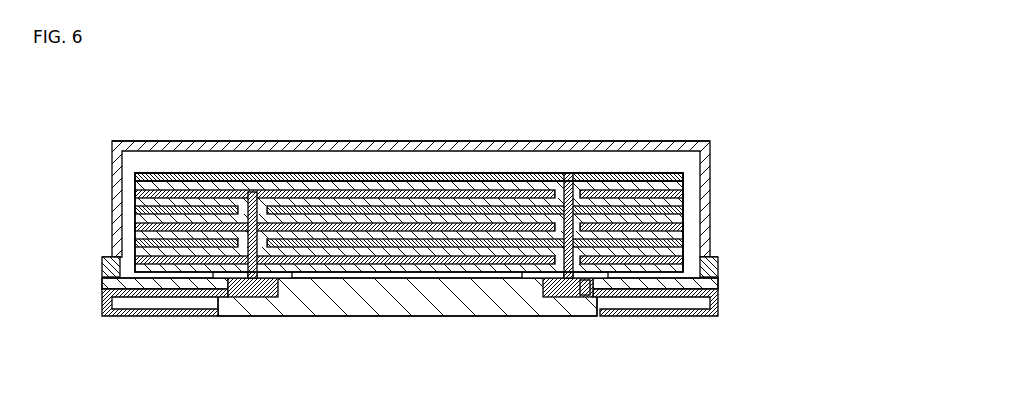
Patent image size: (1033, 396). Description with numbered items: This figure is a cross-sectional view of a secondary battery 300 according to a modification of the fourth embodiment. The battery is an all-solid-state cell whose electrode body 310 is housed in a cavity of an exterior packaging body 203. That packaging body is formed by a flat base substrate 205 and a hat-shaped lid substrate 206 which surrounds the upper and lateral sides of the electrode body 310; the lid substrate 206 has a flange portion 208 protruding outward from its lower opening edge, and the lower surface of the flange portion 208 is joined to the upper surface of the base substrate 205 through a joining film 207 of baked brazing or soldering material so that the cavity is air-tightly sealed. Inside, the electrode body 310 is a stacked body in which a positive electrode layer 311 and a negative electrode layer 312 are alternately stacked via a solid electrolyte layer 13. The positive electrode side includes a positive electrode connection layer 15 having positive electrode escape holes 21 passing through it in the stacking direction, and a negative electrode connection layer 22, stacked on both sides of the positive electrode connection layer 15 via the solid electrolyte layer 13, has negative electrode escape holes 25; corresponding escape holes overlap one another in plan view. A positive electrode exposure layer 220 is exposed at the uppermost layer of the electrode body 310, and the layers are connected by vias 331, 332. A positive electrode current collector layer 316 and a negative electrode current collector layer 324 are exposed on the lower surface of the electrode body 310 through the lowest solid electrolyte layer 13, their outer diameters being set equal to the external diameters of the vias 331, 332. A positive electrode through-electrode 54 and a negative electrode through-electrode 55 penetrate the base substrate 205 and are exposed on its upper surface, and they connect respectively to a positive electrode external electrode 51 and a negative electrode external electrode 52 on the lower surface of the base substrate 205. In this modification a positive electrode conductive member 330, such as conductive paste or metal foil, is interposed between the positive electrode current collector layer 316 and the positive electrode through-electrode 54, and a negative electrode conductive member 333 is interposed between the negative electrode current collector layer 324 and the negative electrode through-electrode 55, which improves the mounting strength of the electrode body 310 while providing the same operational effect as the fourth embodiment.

The secondary battery 300 is at (729, 111).
The exterior packaging body 203 is at (720, 165).
The lid substrate 206 is at (634, 143).
The flange portion 208 is at (719, 256).
The joining film 207 is at (719, 270).
The base substrate 205 is at (712, 284).
The positive electrode external electrode 51 is at (652, 317).
The negative electrode external electrode 52 is at (160, 315).
The positive electrode through-electrode 54 is at (558, 298).
The negative electrode through-electrode 55 is at (240, 300).
The electrode body 310 is at (599, 92).
The positive electrode layer 311 is at (508, 162).
The negative electrode layer 312 is at (447, 176).
The solid electrolyte layer 13 is at (552, 178).
The positive electrode connection layer 15 is at (412, 236).
The positive electrode escape hole 21 is at (258, 225).
The negative electrode connection layer 22 is at (135, 226).
The negative electrode escape hole 25 is at (552, 250).
The via 331 is at (571, 185).
The via 332 is at (235, 232).
The positive electrode exposure layer 220 is at (662, 176).
The negative electrode current collector layer 324 is at (252, 300).
The positive electrode current collector layer 316 is at (567, 282).
The positive electrode conductive member 330 is at (586, 282).
The negative electrode conductive member 333 is at (300, 278).